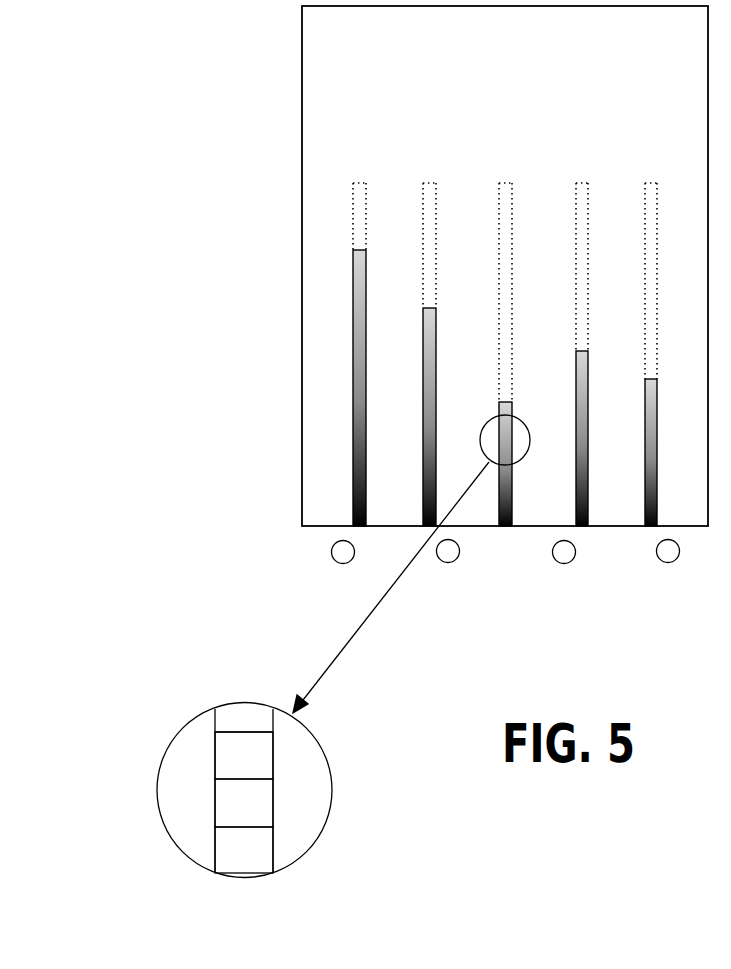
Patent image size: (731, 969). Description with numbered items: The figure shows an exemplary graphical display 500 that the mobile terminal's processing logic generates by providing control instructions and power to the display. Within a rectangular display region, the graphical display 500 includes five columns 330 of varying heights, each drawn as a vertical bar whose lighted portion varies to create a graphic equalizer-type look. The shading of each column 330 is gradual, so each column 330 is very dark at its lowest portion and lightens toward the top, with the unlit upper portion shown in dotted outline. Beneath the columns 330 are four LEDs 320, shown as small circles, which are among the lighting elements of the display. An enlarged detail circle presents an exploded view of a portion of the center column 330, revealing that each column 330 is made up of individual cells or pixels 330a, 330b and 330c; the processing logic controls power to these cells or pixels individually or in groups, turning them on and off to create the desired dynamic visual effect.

The graphical display 500 is at (283, 76).
The columns 330 is at (503, 179).
The LEDs 320 is at (320, 549).
The cell or pixel 330a is at (228, 842).
The cell or pixel 330b is at (228, 800).
The cell or pixel 330c is at (236, 747).